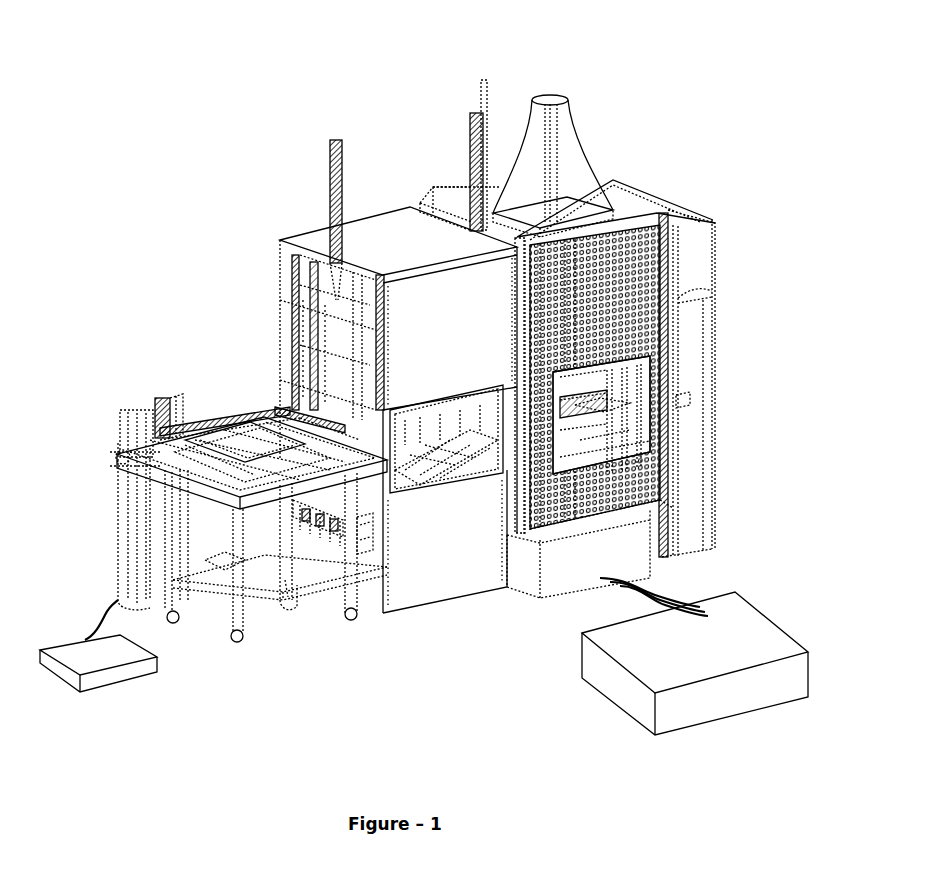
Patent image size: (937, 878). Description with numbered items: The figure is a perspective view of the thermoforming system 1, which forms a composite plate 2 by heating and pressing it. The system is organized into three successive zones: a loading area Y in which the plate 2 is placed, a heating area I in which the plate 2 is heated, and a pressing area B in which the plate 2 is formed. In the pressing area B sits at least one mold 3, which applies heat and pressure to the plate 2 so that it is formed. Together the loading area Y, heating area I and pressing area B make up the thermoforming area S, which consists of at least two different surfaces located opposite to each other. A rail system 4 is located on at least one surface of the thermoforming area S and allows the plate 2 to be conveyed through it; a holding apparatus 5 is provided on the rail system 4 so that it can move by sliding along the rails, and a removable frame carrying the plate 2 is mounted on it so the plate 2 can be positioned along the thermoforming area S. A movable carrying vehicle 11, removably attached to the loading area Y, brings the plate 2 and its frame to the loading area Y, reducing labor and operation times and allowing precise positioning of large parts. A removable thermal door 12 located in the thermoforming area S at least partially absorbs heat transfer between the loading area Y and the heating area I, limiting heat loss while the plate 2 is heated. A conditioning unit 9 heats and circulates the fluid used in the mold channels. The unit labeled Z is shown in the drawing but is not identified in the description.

The thermoforming system 1 is at (190, 123).
The composite plate 2 is at (247, 443).
The mold 3 is at (648, 407).
The rail system 4 is at (150, 410).
The holding apparatus 5 is at (184, 407).
The conditioning unit 9 is at (695, 656).
The movable carrying vehicle 11 is at (288, 597).
The removable thermal door 12 is at (328, 373).
The thermoforming area S is at (692, 400).
The loading area Y is at (252, 524).
The heating area I is at (454, 425).
The pressing area B is at (611, 389).
The power box Z is at (98, 646).